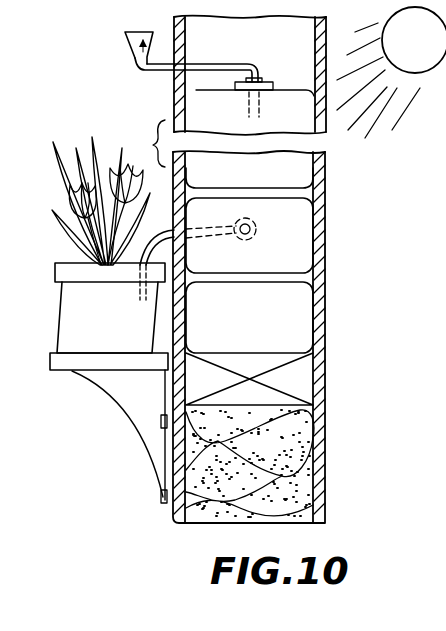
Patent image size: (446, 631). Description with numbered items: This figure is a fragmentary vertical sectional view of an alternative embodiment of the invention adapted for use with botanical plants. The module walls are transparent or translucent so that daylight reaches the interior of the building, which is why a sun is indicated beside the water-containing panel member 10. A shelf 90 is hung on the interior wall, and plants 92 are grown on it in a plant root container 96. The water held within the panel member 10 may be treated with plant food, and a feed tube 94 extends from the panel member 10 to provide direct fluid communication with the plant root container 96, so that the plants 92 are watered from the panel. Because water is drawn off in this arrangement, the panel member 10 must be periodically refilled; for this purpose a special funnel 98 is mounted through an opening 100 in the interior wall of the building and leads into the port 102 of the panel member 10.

The panel member 10 is at (327, 261).
The shelf 90 is at (72, 362).
The plants 92 is at (135, 148).
The feed tube 94 is at (212, 238).
The plant root container 96 is at (114, 319).
The special funnel 98 is at (127, 49).
The opening 100 is at (171, 75).
The port 102 is at (256, 80).